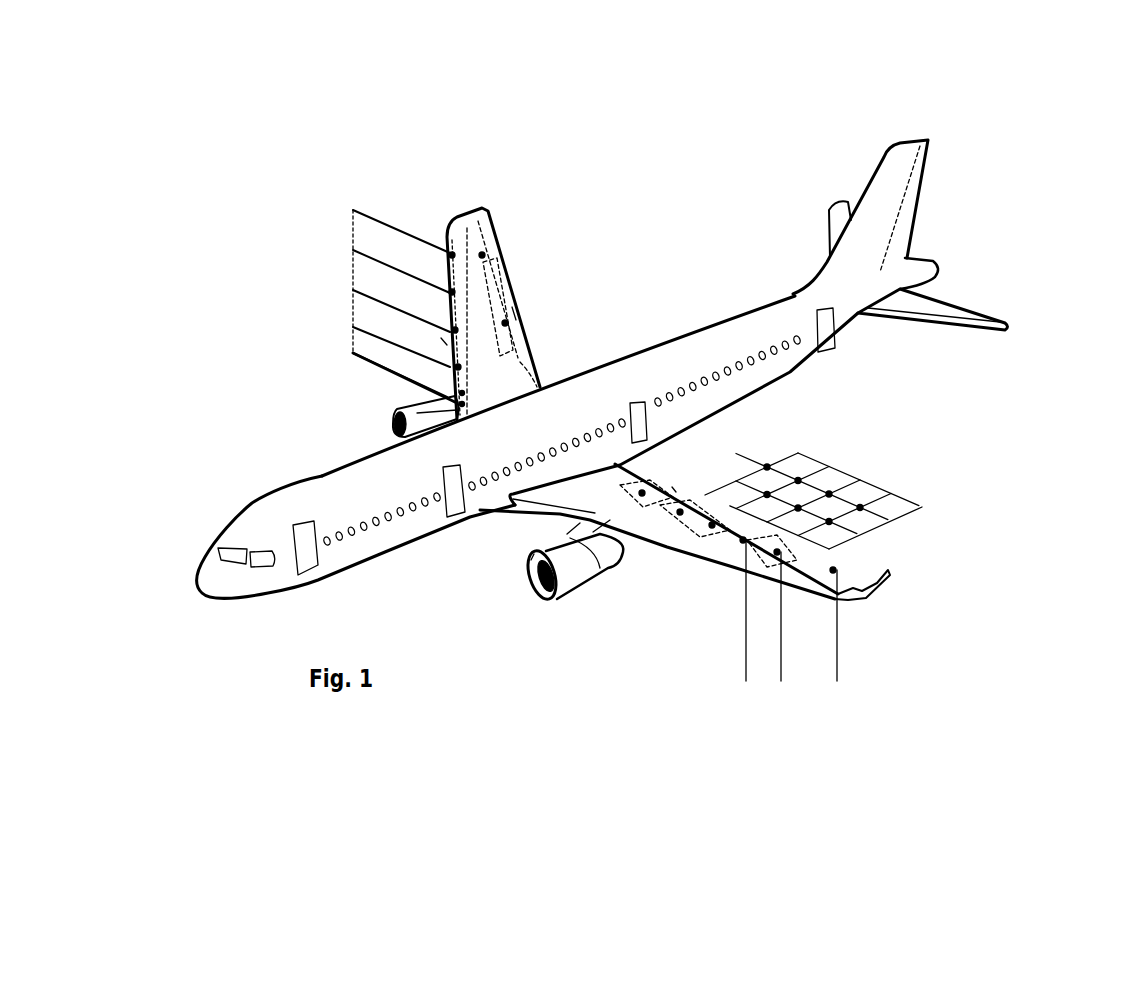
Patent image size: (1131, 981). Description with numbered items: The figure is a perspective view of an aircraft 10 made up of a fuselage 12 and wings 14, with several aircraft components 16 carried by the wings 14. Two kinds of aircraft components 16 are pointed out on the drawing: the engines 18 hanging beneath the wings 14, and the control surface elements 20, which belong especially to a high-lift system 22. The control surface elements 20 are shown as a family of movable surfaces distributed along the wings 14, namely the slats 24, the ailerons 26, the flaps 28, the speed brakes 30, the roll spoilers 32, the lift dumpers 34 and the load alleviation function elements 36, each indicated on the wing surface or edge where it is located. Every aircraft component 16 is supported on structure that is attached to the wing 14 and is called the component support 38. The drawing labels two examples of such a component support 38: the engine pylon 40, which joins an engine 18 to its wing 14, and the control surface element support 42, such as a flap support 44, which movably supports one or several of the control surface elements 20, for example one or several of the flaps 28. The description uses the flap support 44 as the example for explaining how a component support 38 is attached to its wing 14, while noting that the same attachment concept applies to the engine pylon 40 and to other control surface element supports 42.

The aircraft 10 is at (1022, 372).
The fuselage 12 is at (322, 476).
The wings 14 is at (465, 228).
The aircraft components 16 is at (689, 419).
The engines 18 is at (567, 580).
The control surface elements 20 is at (712, 419).
The high-lift system 22 is at (500, 351).
The slats 24 is at (353, 210).
The ailerons 26 is at (452, 254).
The flaps 28 is at (505, 323).
The speed brakes 30 is at (919, 506).
The roll spoilers 32 is at (888, 520).
The lift dumpers 34 is at (857, 534).
The load alleviation function elements 36 is at (746, 681).
The component support 38 is at (670, 441).
The engine pylon 40 is at (477, 598).
The control surface element support 42 is at (597, 292).
The flap support 44 is at (524, 302).